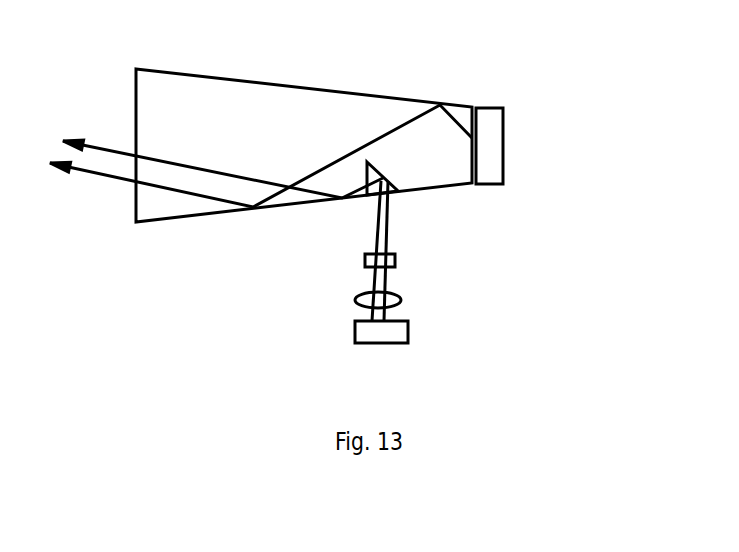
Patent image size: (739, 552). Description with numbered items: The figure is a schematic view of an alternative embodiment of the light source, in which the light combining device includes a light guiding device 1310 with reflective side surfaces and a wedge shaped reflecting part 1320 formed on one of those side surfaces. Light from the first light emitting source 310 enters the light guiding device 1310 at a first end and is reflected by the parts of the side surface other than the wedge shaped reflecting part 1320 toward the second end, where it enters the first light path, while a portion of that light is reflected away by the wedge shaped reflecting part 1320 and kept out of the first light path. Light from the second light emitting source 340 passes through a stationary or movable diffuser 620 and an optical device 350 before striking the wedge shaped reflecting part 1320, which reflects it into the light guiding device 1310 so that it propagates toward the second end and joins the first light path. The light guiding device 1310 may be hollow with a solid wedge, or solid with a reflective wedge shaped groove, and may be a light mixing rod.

The light guiding device 1310 is at (403, 101).
The first light emitting source 310 is at (480, 184).
The wedge shaped reflecting part 1320 is at (398, 200).
The diffuser 620 is at (364, 258).
The optical device 350 is at (356, 300).
The second light emitting source 340 is at (407, 338).